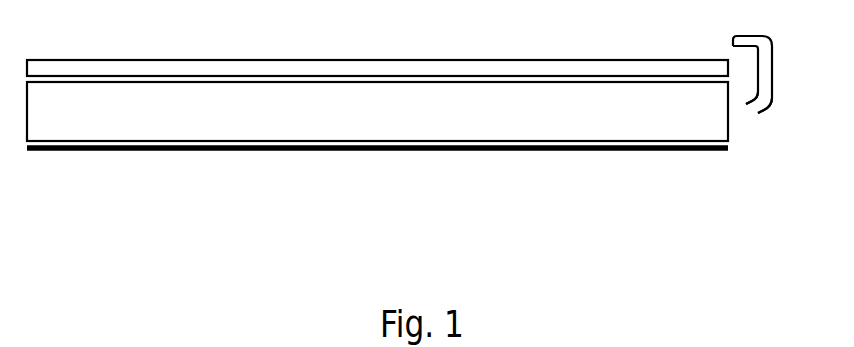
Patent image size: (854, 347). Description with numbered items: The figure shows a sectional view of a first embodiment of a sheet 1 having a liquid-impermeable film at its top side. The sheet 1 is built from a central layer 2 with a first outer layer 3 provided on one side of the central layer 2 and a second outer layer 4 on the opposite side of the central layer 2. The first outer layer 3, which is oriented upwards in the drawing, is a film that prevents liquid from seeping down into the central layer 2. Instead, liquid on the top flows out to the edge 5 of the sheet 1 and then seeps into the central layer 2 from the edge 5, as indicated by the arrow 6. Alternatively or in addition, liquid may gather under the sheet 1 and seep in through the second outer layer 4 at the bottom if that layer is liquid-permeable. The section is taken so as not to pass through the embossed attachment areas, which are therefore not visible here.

The sheet 1 is at (90, 180).
The central layer 2 is at (227, 112).
The first outer layer (film) 3 is at (325, 65).
The second outer layer 4 is at (528, 152).
The edge 5 is at (780, 113).
The arrow 6 is at (751, 108).